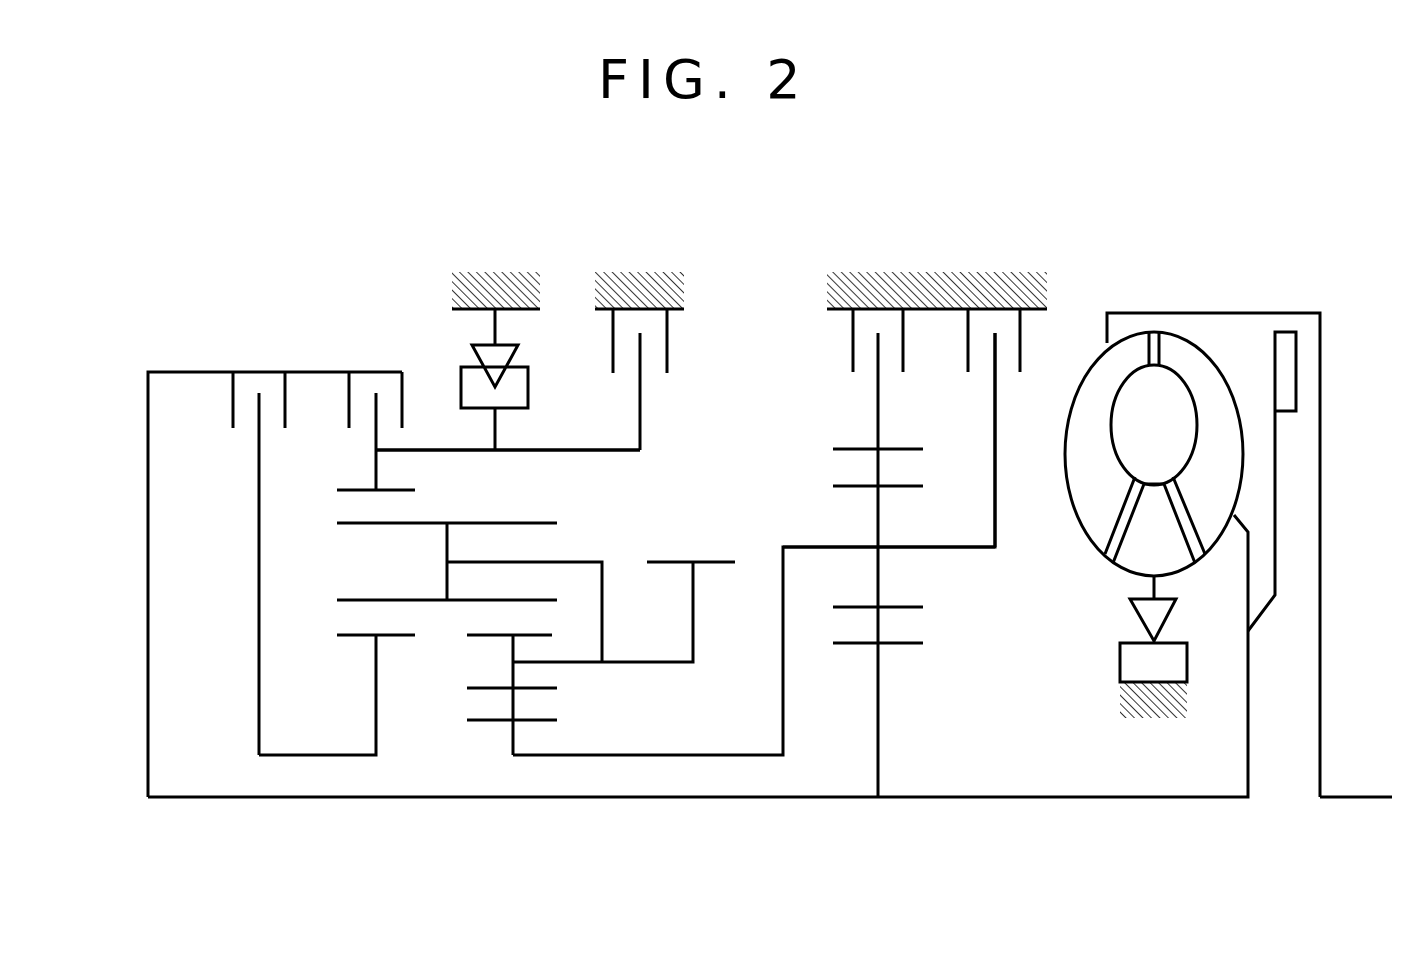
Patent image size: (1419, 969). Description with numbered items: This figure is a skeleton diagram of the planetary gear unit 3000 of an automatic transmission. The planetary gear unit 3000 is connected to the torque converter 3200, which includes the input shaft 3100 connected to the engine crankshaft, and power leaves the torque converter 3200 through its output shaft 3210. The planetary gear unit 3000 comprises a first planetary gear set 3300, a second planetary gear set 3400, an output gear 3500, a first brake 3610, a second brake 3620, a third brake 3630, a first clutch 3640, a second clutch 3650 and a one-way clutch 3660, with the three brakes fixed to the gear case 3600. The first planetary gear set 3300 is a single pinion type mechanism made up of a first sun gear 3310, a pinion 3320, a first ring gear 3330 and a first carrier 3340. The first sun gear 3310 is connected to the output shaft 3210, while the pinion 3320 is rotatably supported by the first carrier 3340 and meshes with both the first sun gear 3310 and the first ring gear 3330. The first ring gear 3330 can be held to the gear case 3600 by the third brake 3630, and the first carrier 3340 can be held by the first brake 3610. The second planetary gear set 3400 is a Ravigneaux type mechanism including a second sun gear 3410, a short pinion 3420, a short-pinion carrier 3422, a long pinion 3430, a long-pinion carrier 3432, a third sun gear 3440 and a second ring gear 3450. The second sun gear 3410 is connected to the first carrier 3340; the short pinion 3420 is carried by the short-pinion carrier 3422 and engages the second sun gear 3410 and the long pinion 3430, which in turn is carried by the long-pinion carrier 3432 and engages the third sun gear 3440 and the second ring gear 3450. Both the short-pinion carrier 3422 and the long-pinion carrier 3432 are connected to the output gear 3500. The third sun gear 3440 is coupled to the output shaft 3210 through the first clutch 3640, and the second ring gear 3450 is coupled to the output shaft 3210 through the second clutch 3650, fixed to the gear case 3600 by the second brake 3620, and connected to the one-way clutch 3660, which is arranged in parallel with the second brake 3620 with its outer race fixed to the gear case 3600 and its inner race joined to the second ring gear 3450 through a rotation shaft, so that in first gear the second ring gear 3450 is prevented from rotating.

The planetary gear unit 3000 is at (760, 212).
The input shaft 3100 is at (1353, 797).
The torque converter 3200 is at (1196, 277).
The output shaft of the torque converter 3210 is at (1063, 775).
The first planetary gear set 3300 is at (925, 620).
The sun gear S(UD) 3310 is at (902, 693).
The pinion 3320 is at (914, 603).
The ring gear R(UD) 3330 is at (897, 439).
The carrier C(UD) 3340 is at (998, 513).
The second planetary gear set 3400 is at (627, 678).
The sun gear S(D) 3410 is at (578, 723).
The short pinion 3420 is at (452, 653).
The carrier C(1) 3422 is at (583, 662).
The long pinion 3430 is at (564, 520).
The carrier C(2) 3432 is at (537, 560).
The sun gear S(S) 3440 is at (343, 647).
The ring gear R(1)(R(2)) 3450 is at (413, 474).
The output gear 3500 is at (735, 545).
The gear case 3600 is at (493, 270).
The B1 brake 3610 is at (1019, 386).
The B2 brake 3620 is at (667, 385).
The B3 brake 3630 is at (838, 385).
The C1 clutch 3640 is at (218, 416).
The C2 clutch 3650 is at (334, 416).
The one-way clutch F 3660 is at (447, 350).